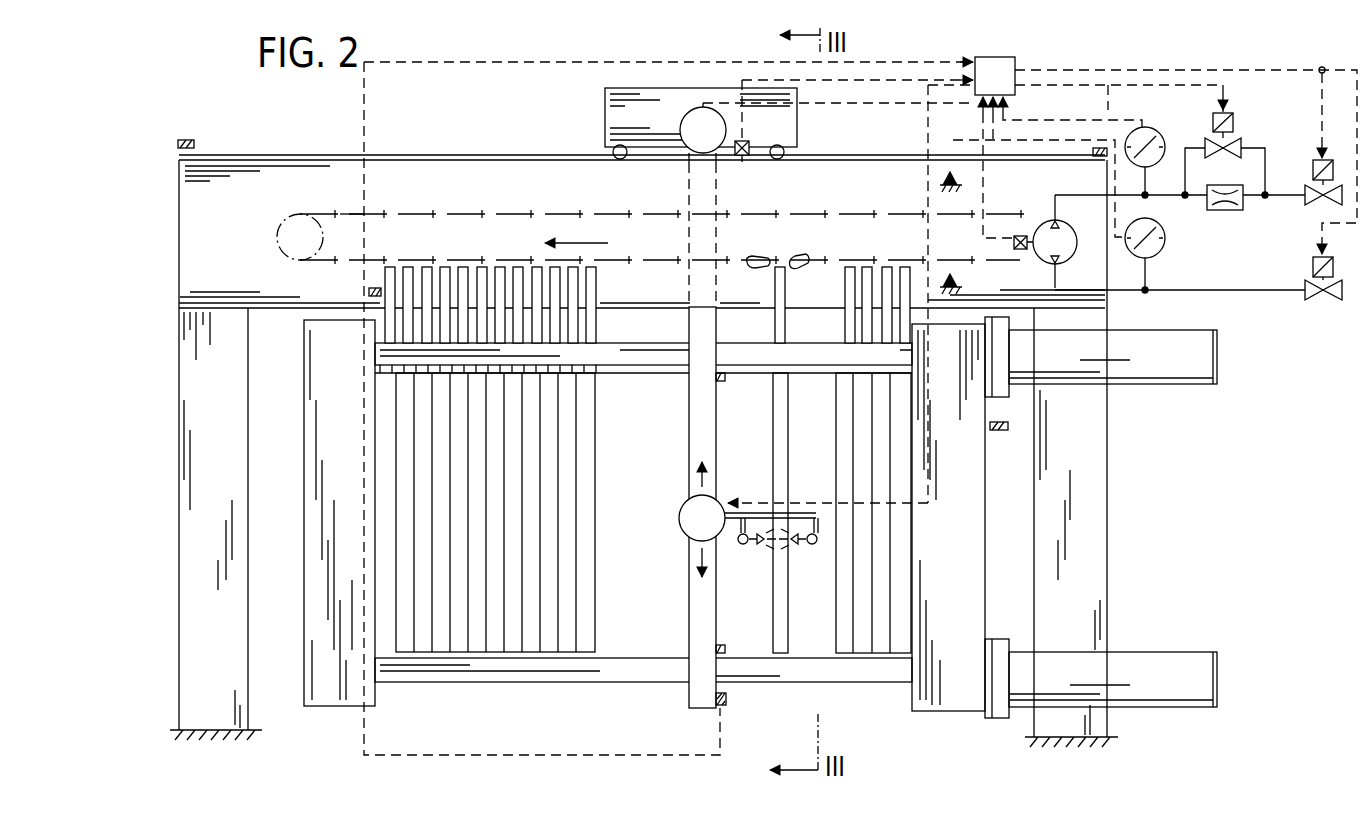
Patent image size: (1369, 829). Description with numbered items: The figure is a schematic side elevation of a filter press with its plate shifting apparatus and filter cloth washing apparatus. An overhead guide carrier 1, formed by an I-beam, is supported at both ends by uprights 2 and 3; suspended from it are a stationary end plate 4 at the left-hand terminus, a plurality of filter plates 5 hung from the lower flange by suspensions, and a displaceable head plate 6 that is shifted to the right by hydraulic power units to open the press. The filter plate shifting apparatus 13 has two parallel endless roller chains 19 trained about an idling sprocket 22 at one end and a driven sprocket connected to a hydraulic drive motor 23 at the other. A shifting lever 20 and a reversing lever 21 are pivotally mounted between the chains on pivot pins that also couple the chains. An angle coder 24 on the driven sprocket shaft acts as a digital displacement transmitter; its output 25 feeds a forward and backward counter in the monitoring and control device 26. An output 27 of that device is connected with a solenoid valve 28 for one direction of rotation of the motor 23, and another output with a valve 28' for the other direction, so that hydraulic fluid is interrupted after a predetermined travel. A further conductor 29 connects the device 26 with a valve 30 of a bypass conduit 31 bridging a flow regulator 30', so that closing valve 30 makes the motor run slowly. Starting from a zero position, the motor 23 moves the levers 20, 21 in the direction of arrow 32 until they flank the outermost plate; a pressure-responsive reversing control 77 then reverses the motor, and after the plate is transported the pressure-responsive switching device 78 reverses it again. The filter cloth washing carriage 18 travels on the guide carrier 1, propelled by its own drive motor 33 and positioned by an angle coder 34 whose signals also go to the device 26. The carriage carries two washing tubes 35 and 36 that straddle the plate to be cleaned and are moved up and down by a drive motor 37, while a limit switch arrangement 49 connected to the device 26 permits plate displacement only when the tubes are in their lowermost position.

The guide carrier 1 is at (247, 160).
The upright 2 is at (234, 696).
The upright 3 is at (1097, 567).
The end plate 4 is at (322, 551).
The filter plates 5 is at (556, 650).
The head plate 6 is at (950, 700).
The filter plate shifting apparatus 13 is at (377, 207).
The filter cloth washing carriage 18 is at (640, 84).
The endless roller chains 19 is at (352, 212).
The shifting lever 20 is at (763, 260).
The reversing lever 21 is at (798, 262).
The idling sprocket 22 is at (292, 228).
The hydraulic drive motor 23 is at (1045, 225).
The angle coder 24 is at (1003, 241).
The output of the angle coder 25 is at (985, 138).
The monitoring and control device 26 is at (1010, 65).
The output of the monitoring and control device 27 is at (1160, 70).
The solenoid valve 28 is at (1308, 165).
The valve 28' is at (1319, 305).
The conductor 29 is at (1108, 92).
The bypass valve 30 is at (1245, 120).
The flow regulator 30' is at (1225, 223).
The bypass conduit 31 is at (1185, 185).
The arrow 32 is at (612, 240).
The drive motor 33 is at (688, 124).
The angle coder 34 is at (746, 143).
The washing tube 35 is at (743, 545).
The washing tube 36 is at (812, 545).
The drive motor 37 is at (680, 515).
The limit switch arrangement 49 is at (726, 698).
The pressure-responsive reversing control 77 is at (1165, 236).
The pressure-responsive switching device 78 is at (1160, 134).